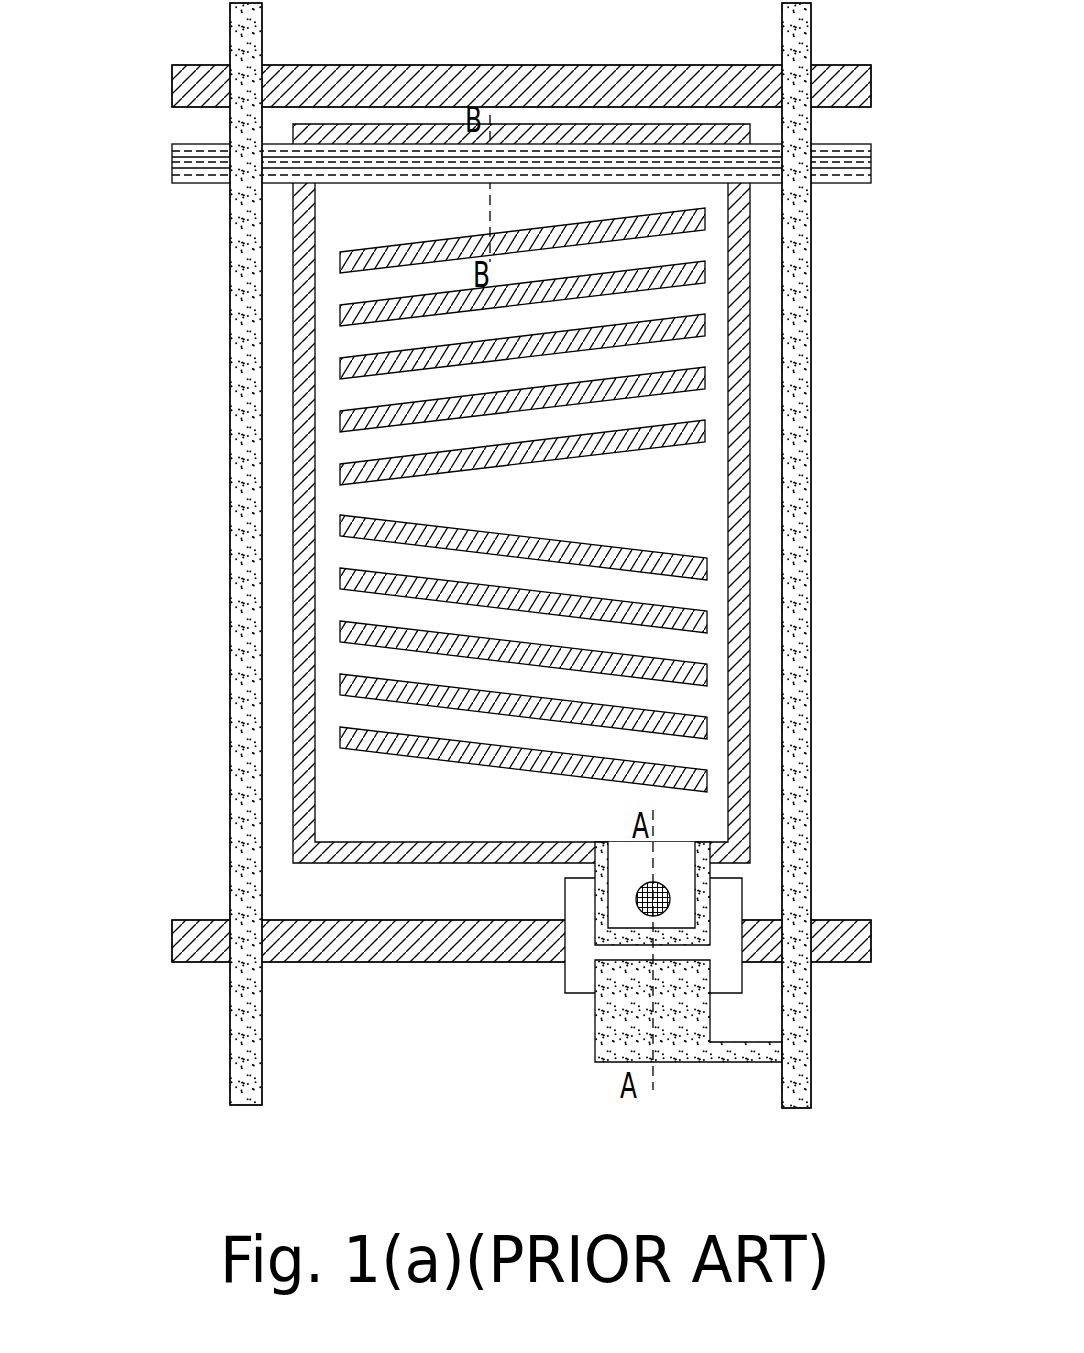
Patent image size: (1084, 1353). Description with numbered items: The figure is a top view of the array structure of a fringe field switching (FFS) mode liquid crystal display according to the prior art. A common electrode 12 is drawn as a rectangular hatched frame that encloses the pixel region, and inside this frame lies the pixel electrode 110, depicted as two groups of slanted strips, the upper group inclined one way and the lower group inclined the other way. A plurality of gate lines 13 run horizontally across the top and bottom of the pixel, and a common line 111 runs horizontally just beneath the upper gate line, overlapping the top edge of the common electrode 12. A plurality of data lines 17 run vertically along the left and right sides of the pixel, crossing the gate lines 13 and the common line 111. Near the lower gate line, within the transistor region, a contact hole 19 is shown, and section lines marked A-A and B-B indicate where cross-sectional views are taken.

The common electrode 12 is at (742, 258).
The gate lines 13 is at (192, 72).
The data lines 17 is at (797, 517).
The contact hole 19 is at (666, 890).
The pixel electrode 110 is at (695, 400).
The common line 111 is at (192, 168).